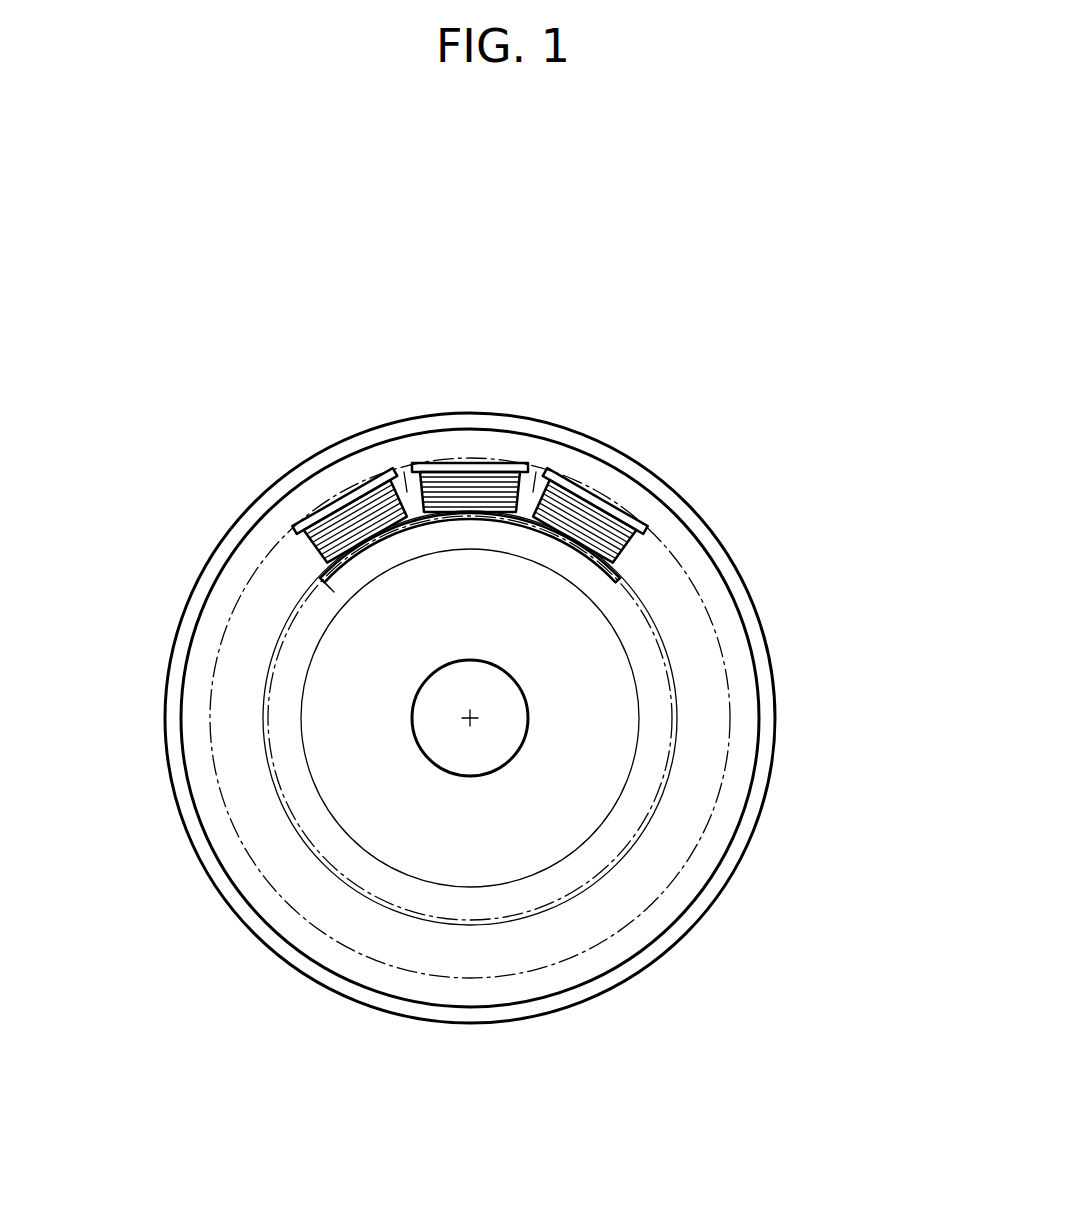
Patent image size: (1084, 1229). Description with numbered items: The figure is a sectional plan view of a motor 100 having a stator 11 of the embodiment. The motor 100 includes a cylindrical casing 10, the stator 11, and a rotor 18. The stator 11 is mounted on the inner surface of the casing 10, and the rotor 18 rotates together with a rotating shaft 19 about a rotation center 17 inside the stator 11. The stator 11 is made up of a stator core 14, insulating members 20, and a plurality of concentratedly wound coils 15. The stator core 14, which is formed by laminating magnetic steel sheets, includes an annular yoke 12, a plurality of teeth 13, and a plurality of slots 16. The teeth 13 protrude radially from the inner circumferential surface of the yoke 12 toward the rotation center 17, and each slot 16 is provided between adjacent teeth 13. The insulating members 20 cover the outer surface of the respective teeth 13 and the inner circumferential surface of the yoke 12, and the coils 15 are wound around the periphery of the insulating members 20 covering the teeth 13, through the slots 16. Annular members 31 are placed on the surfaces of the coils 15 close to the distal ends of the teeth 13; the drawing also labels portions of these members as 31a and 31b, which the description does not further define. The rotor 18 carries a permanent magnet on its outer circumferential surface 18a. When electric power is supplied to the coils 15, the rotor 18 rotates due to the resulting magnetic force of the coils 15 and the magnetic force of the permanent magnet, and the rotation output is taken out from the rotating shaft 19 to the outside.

The motor 100 is at (742, 247).
The cylindrical casing 10 is at (650, 478).
The stator 11 is at (688, 553).
The annular yoke 12 is at (470, 455).
The teeth 13 is at (528, 466).
The stator core 14 is at (478, 403).
The concentratedly wound coils 15 is at (417, 490).
The slots 16 is at (602, 418).
The rotation center 17 is at (472, 720).
The rotor 18 is at (592, 718).
The outer circumferential surface 18a is at (632, 668).
The rotating shaft 19 is at (468, 777).
The insulating members 20 is at (345, 498).
The annular members 31 is at (338, 580).
The lead wire end 31a is at (327, 587).
The lead wire bent portion 31b is at (283, 660).